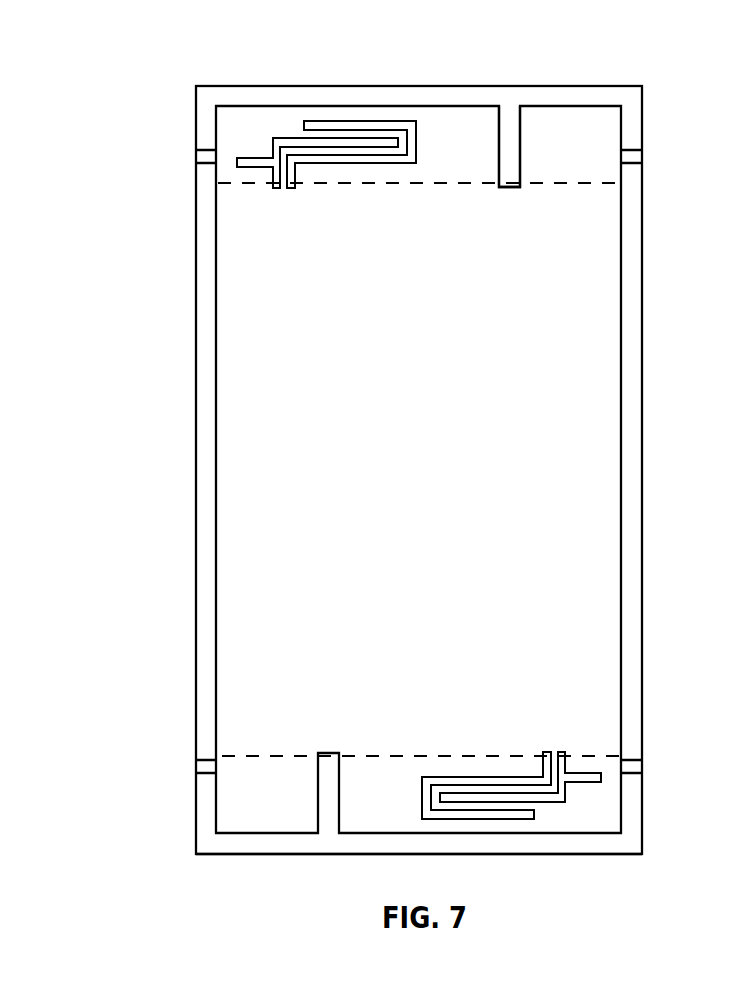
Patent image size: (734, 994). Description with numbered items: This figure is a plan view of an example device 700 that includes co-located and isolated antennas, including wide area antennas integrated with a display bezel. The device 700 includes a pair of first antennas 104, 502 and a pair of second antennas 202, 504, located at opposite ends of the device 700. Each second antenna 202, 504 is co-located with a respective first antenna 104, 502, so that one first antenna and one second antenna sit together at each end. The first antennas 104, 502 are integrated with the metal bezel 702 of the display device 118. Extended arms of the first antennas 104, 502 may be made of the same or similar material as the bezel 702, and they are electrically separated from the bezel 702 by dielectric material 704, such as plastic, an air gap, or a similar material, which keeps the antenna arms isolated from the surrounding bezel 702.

The device 700 is at (164, 111).
The metal bezel 702 is at (197, 702).
The dielectric material 704 is at (197, 764).
The first antenna 502 is at (539, 79).
The display device 118 is at (441, 482).
The second antenna 504 is at (264, 172).
The second antenna 202 is at (575, 764).
The first antenna 104 is at (297, 861).